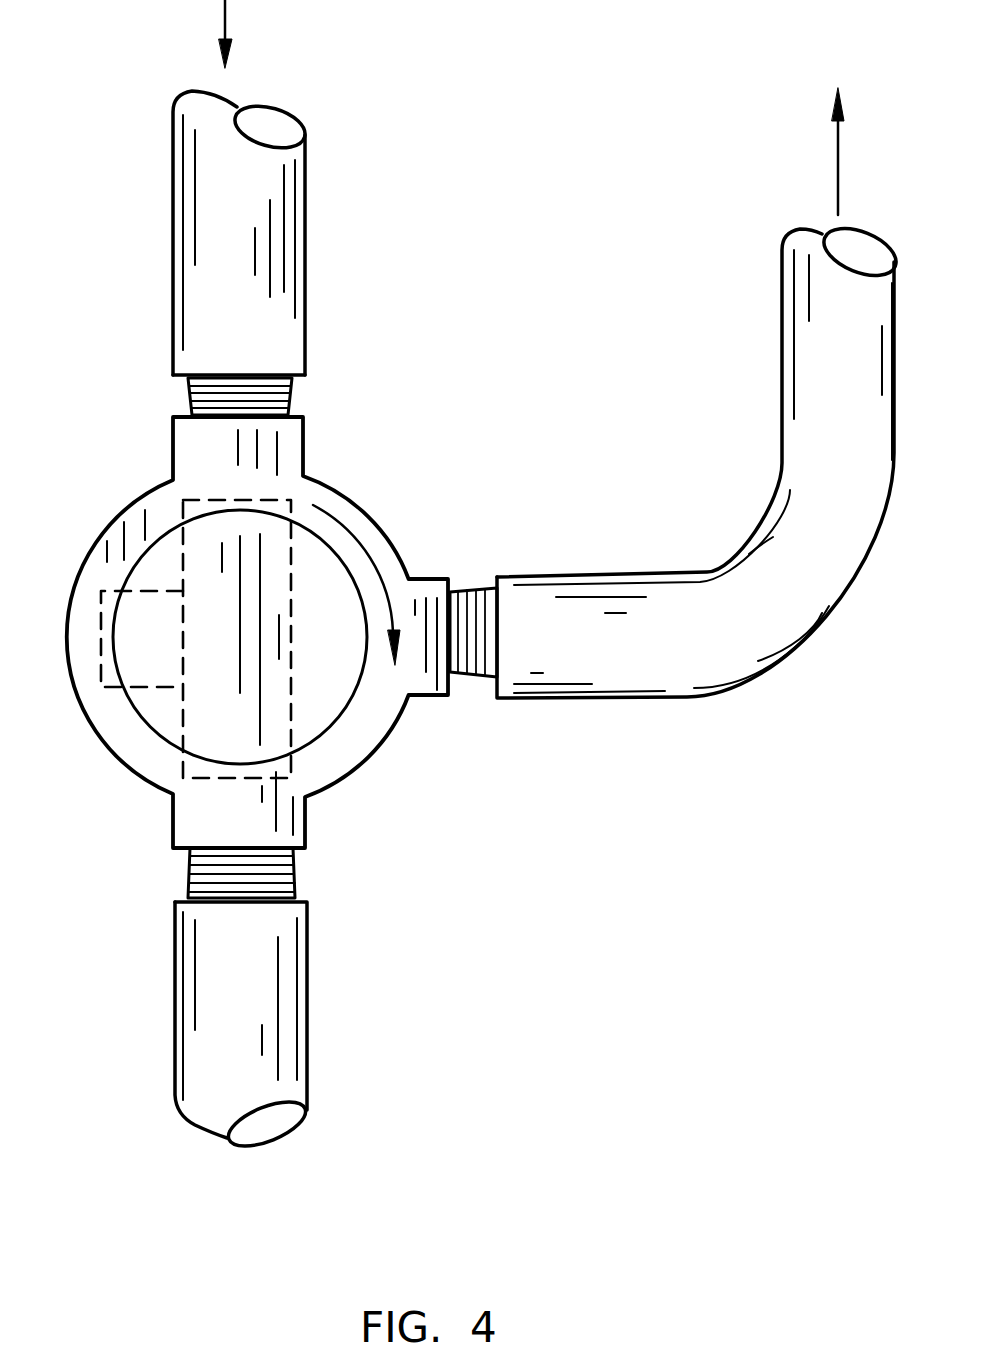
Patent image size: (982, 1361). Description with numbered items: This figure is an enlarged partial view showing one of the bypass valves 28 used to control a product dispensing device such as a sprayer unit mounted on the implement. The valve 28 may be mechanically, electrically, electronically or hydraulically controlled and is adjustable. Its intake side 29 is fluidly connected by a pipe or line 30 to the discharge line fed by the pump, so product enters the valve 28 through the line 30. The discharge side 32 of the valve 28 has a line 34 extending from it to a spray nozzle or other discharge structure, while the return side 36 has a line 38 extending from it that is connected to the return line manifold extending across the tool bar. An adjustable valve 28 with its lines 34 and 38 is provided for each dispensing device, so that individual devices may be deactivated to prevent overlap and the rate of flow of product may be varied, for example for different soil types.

The bypass valve 28 is at (108, 517).
The intake side 29 is at (292, 413).
The pipe or line 30 is at (281, 278).
The discharge side 32 is at (302, 852).
The line 34 is at (283, 990).
The return side 36 is at (450, 690).
The line 38 is at (670, 672).